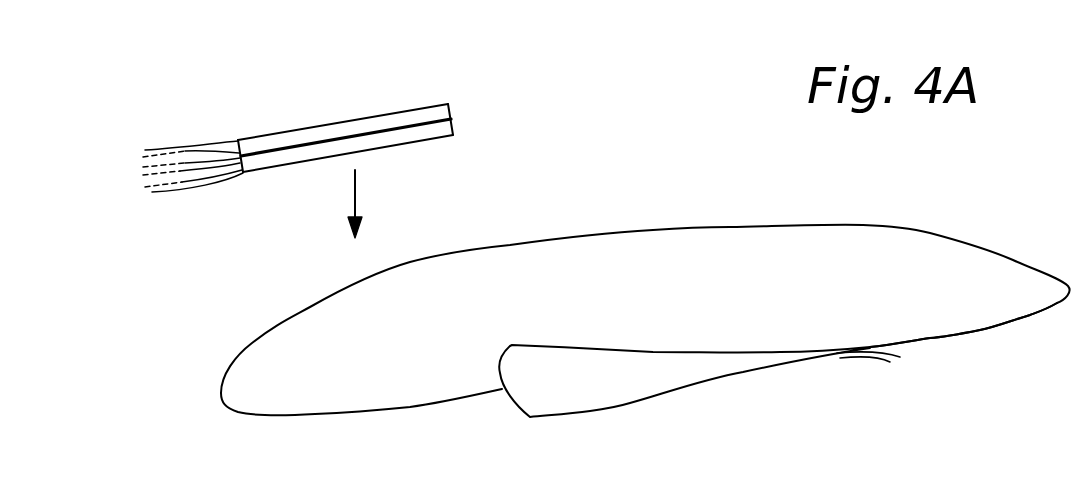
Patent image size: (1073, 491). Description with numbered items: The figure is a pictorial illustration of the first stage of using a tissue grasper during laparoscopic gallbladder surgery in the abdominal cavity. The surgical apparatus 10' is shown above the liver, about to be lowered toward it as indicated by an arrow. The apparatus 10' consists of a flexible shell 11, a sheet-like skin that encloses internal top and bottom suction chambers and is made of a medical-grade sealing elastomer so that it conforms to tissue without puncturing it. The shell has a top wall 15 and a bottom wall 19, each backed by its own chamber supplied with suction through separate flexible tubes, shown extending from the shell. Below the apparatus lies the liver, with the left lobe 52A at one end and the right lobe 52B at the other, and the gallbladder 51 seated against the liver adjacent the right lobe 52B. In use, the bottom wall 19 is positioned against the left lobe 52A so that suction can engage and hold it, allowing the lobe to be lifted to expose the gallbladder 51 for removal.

The surgical apparatus 10' is at (357, 114).
The top wall 15 is at (408, 108).
The bottom wall 19 is at (407, 144).
The flexible shell 11 is at (453, 135).
The gallbladder 51 is at (630, 390).
The left lobe of the liver 52A is at (338, 397).
The right lobe of the liver 52B is at (953, 303).